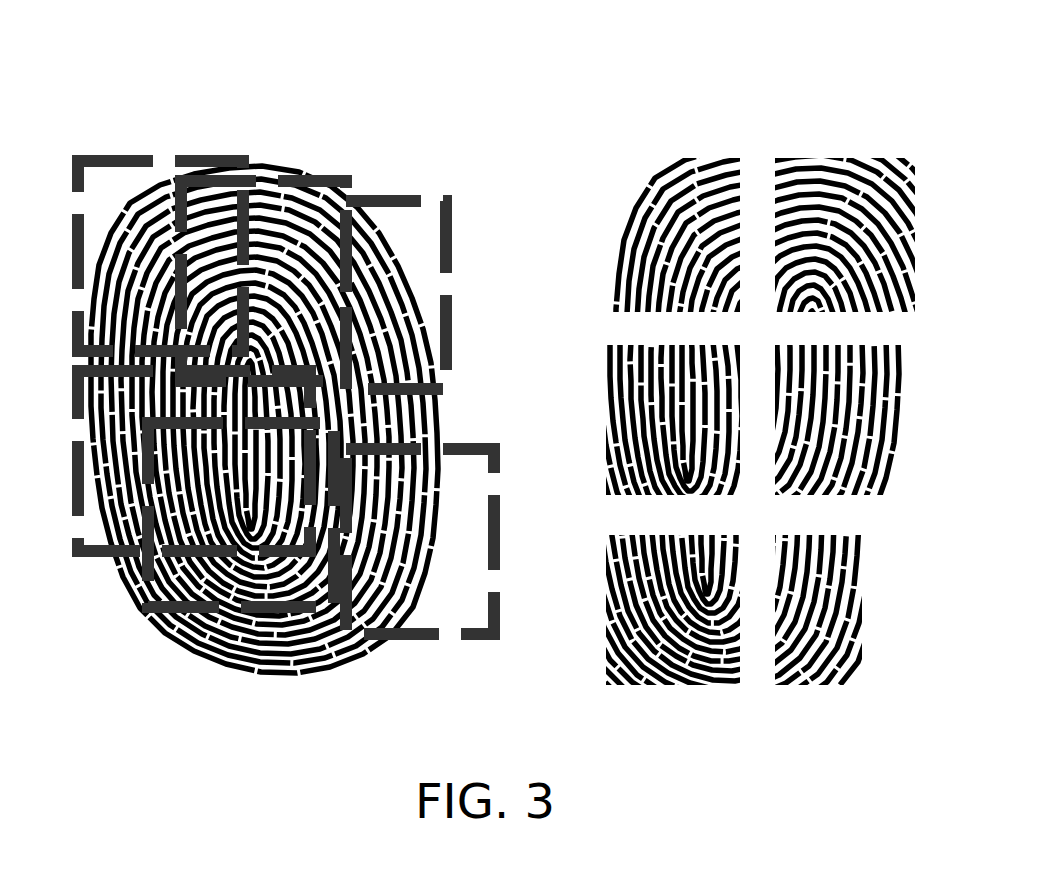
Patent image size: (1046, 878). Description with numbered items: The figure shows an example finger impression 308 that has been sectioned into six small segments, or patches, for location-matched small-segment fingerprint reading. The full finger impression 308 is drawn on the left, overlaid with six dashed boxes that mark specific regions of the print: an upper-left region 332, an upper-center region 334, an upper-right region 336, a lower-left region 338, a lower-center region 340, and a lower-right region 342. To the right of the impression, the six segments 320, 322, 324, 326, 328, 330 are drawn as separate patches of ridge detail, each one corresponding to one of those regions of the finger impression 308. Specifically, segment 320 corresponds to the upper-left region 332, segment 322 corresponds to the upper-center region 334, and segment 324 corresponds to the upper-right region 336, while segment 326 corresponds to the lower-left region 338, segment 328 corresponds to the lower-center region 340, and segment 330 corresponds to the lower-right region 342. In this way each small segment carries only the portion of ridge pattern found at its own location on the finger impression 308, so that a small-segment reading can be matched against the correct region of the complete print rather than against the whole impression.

The finger impression 308 is at (136, 91).
The segment 320 is at (643, 212).
The segment 322 is at (857, 303).
The segment 324 is at (855, 492).
The segment 326 is at (690, 680).
The segment 328 is at (608, 362).
The segment 330 is at (805, 683).
The upper-left region 332 is at (198, 155).
The upper-center region 334 is at (312, 173).
The upper-right region 336 is at (410, 195).
The lower-left region 338 is at (100, 557).
The lower-center region 340 is at (235, 612).
The lower-right region 342 is at (433, 636).